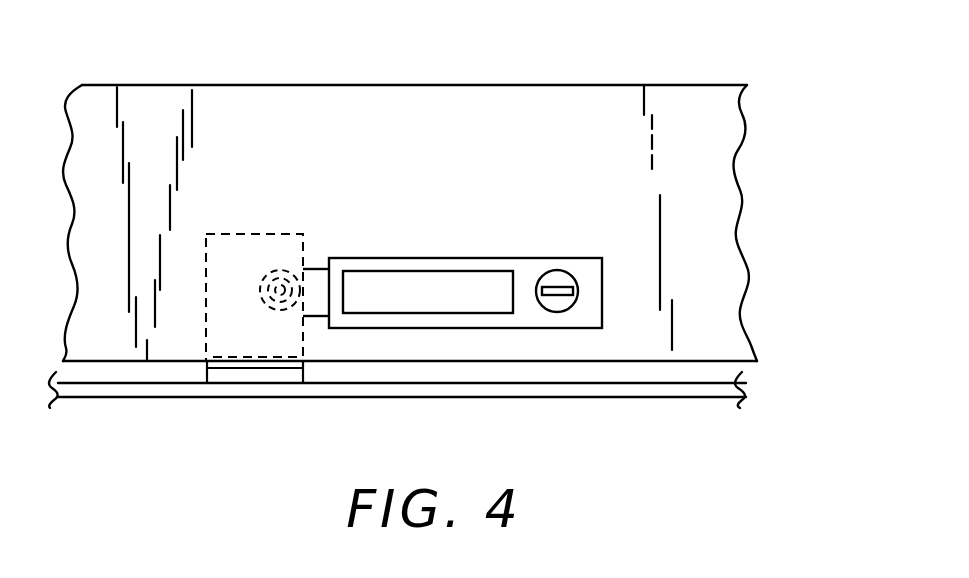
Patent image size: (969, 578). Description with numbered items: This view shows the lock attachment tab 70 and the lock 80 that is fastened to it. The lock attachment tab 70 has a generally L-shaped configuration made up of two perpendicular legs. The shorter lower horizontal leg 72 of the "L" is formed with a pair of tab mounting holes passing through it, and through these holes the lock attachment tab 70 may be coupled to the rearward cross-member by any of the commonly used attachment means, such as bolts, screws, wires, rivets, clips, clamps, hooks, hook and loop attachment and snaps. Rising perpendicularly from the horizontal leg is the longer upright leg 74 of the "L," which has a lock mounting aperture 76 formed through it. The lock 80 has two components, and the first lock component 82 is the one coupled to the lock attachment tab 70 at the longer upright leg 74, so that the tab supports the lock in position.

The lock attachment tab 70 is at (238, 230).
The shorter lower horizontal leg 72 is at (228, 373).
The longer upright leg 74 is at (263, 254).
The lock mounting aperture 76 is at (290, 284).
The lock 80 is at (485, 258).
The first lock component 82 is at (314, 296).